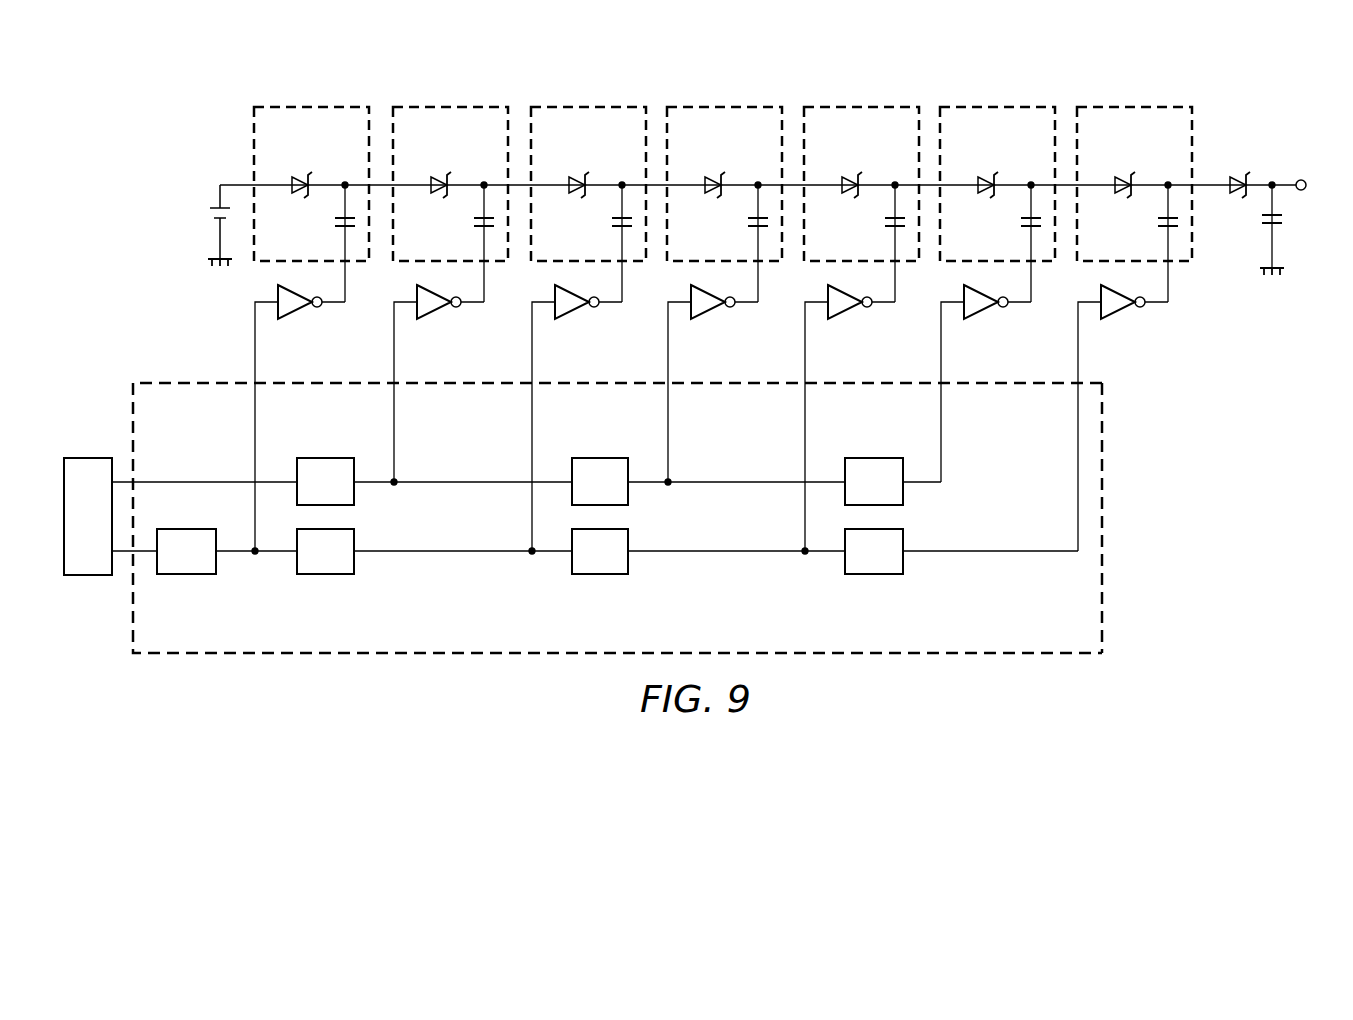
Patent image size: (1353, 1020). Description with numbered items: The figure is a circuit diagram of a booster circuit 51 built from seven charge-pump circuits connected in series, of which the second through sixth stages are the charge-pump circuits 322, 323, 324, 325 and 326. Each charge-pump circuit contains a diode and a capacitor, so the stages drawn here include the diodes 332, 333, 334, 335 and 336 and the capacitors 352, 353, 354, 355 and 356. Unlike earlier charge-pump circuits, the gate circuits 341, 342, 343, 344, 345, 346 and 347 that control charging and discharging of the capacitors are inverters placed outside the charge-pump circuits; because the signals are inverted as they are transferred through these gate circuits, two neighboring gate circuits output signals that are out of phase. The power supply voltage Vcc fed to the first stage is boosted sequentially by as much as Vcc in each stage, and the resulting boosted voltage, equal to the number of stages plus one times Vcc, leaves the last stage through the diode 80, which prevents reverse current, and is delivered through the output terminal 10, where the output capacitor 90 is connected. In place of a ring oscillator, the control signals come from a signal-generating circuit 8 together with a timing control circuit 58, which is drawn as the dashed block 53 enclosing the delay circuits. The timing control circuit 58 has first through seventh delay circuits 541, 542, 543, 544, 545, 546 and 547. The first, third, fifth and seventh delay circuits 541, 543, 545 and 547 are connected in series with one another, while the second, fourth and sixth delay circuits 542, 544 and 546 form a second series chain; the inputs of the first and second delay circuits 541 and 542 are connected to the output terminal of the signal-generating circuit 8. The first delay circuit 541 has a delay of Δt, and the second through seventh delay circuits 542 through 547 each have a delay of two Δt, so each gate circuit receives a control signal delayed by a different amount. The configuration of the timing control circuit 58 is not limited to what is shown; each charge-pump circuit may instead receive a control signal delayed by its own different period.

The booster circuit 51 is at (108, 98).
The charge-pump circuit 322 is at (442, 107).
The charge-pump circuit 323 is at (580, 107).
The charge-pump circuit 324 is at (716, 107).
The charge-pump circuit 325 is at (853, 107).
The charge-pump circuit 326 is at (989, 107).
The diode 332 is at (446, 177).
The diode 333 is at (584, 177).
The diode 334 is at (720, 177).
The diode 335 is at (857, 177).
The diode 336 is at (993, 177).
The capacitor 352 is at (474, 222).
The capacitor 353 is at (612, 222).
The capacitor 354 is at (748, 222).
The capacitor 355 is at (885, 222).
The capacitor 356 is at (1021, 222).
The gate circuit 341 is at (298, 313).
The gate circuit 342 is at (437, 313).
The gate circuit 343 is at (575, 313).
The gate circuit 344 is at (711, 313).
The gate circuit 345 is at (848, 313).
The gate circuit 346 is at (984, 313).
The gate circuit 347 is at (1121, 313).
The diode 80 is at (1240, 177).
The output terminal 10 is at (1302, 180).
The output capacitor 90 is at (1284, 220).
The signal-generating circuit 8 is at (88, 577).
The timing control circuit 53 is at (975, 654).
The timing control circuit 58 is at (1102, 510).
The first delay circuit 541 is at (187, 576).
The second delay circuit 542 is at (323, 458).
The third delay circuit 543 is at (325, 576).
The fourth delay circuit 544 is at (598, 458).
The fifth delay circuit 545 is at (598, 576).
The sixth delay circuit 546 is at (870, 458).
The seventh delay circuit 547 is at (873, 576).